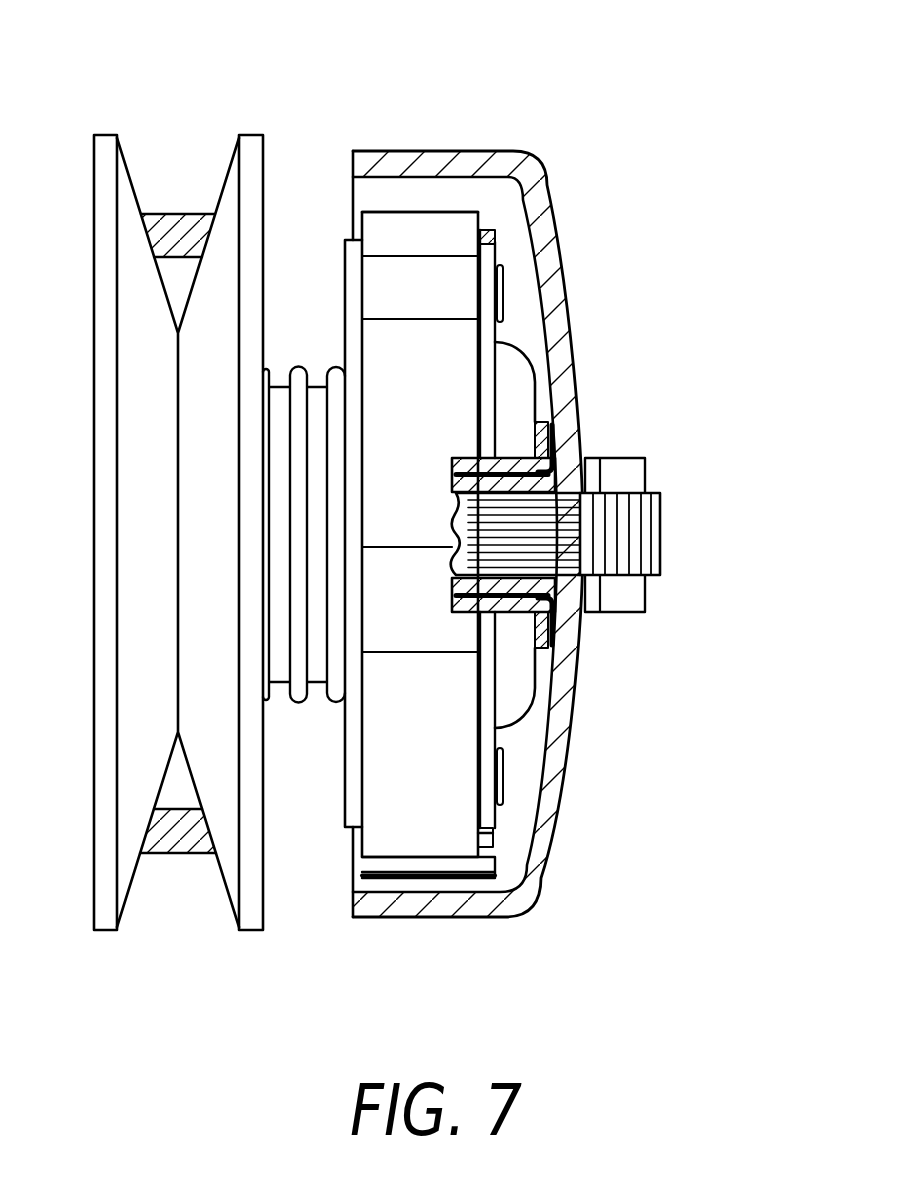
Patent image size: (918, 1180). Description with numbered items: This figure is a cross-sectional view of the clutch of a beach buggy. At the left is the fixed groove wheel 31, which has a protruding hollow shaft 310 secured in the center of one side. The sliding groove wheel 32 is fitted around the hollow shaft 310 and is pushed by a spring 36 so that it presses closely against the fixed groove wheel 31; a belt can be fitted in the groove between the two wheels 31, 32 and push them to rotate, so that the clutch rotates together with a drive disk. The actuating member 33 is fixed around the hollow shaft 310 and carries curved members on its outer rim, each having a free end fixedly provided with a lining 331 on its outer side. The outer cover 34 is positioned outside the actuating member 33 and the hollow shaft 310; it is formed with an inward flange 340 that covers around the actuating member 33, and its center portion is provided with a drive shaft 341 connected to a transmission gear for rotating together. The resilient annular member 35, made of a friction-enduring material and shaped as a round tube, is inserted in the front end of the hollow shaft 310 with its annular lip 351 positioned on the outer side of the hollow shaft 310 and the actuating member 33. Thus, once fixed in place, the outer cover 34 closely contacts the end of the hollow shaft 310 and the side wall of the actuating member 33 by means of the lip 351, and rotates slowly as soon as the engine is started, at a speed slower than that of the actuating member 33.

The fixed groove wheel 31 is at (100, 910).
The sliding groove wheel 32 is at (247, 910).
The actuating member 33 is at (447, 787).
The lining 331 is at (457, 210).
The outer cover 34 is at (550, 277).
The inward flange 340 is at (437, 163).
The drive shaft 341 is at (558, 533).
The resilient annular member 35 is at (507, 472).
The annular lip 351 is at (555, 462).
The spring 36 is at (297, 695).
The hollow shaft 310 is at (507, 602).